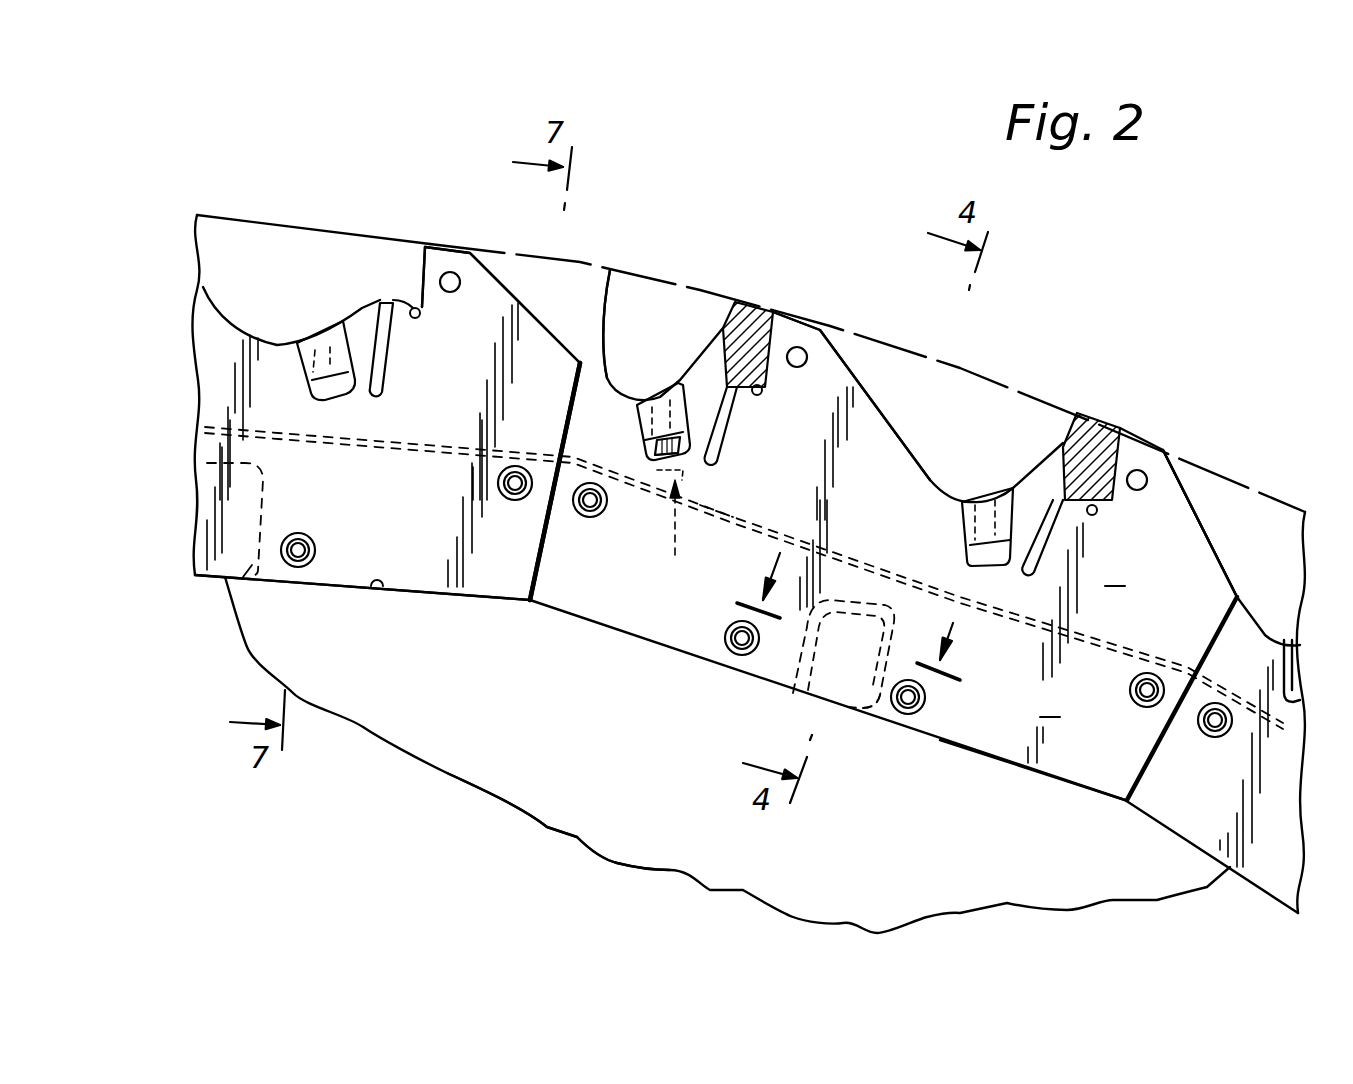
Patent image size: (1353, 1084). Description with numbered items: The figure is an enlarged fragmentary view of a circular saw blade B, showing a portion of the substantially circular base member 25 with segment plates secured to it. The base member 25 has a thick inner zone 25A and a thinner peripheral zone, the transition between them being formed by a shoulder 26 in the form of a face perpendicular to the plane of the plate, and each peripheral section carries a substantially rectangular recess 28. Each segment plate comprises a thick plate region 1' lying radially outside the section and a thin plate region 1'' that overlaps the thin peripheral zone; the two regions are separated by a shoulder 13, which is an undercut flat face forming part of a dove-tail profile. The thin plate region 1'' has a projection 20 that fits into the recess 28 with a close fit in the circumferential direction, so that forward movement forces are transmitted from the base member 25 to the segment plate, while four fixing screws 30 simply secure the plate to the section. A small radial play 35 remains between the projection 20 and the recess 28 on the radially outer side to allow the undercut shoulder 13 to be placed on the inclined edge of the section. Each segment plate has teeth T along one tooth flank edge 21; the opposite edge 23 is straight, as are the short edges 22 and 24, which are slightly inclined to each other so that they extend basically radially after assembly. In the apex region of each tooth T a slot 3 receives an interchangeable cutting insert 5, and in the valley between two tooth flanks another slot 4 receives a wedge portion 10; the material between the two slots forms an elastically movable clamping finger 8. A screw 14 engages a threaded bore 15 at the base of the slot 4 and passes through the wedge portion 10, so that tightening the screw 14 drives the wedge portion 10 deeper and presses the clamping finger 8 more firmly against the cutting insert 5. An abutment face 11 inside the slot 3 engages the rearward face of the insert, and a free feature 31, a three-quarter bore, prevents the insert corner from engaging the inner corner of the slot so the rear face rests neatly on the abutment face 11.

The thick plate region 1' is at (1118, 571).
The thin plate region 1'' is at (827, 700).
The slot 3 is at (412, 265).
The slot 4 is at (327, 388).
The cutting insert 5 is at (748, 322).
The clamping finger 8 is at (381, 302).
The wedge portion 10 is at (680, 380).
The abutment face 11 is at (387, 300).
The shoulder 13 is at (733, 517).
The screw 14 is at (680, 455).
The threaded bore 15 is at (674, 537).
The projection 20 is at (838, 690).
The tooth flank edge 21 is at (1187, 497).
The short edge 22 is at (610, 270).
The edge 23 is at (295, 580).
The short edge 24 is at (533, 553).
The base member 25 is at (577, 833).
The inner zone 25A is at (543, 783).
The shoulder 26 is at (377, 592).
The recess 28 is at (870, 705).
The fixing screw 30 is at (926, 697).
The free feature 31 is at (427, 316).
The radial play 35 is at (813, 610).
The circular saw blade B is at (802, 225).
The tooth T is at (853, 362).